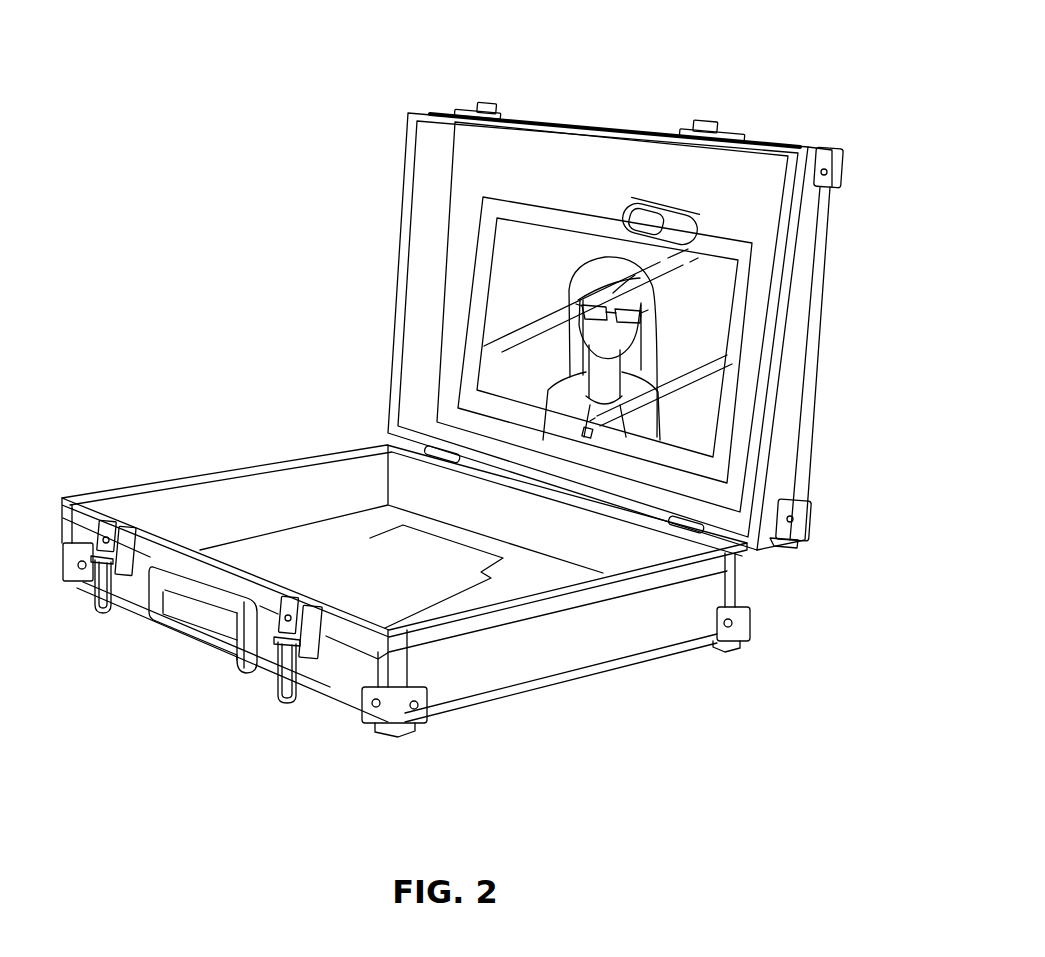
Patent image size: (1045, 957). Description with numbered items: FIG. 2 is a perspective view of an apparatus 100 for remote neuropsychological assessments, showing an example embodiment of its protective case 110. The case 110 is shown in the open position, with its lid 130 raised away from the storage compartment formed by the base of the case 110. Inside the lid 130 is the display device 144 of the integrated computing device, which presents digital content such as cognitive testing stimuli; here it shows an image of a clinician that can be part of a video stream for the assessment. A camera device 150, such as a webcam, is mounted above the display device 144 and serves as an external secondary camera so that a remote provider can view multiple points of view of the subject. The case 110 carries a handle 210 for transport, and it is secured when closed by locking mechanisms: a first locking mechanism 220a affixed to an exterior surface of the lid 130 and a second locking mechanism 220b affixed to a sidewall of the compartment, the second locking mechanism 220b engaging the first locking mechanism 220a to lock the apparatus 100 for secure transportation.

The apparatus 100 is at (201, 242).
The case 110 is at (580, 647).
The lid 130 is at (797, 358).
The display device 144 is at (550, 269).
The camera device 150 is at (627, 200).
The handle 210 is at (197, 652).
The first locking mechanism 220a is at (487, 105).
The second locking mechanism 220b is at (120, 575).